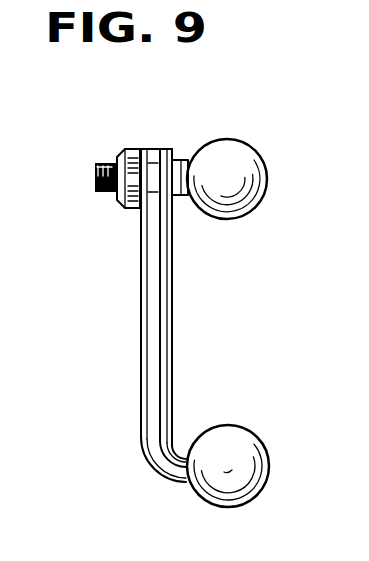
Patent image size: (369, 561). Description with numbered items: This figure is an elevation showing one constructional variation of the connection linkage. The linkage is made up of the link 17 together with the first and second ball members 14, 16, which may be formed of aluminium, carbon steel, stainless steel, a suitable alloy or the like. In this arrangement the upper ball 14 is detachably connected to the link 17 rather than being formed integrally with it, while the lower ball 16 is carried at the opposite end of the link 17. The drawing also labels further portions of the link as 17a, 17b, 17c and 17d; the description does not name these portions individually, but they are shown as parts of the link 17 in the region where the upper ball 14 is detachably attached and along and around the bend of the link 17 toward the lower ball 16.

The first ball member 14 is at (256, 162).
The second ball member 16 is at (252, 445).
The link 17 is at (181, 254).
The stud portion of link bar 17a is at (177, 158).
The bent end portion of link bar 17b is at (175, 477).
The straight leg of link bar 17c is at (142, 393).
The nut 17d is at (118, 150).